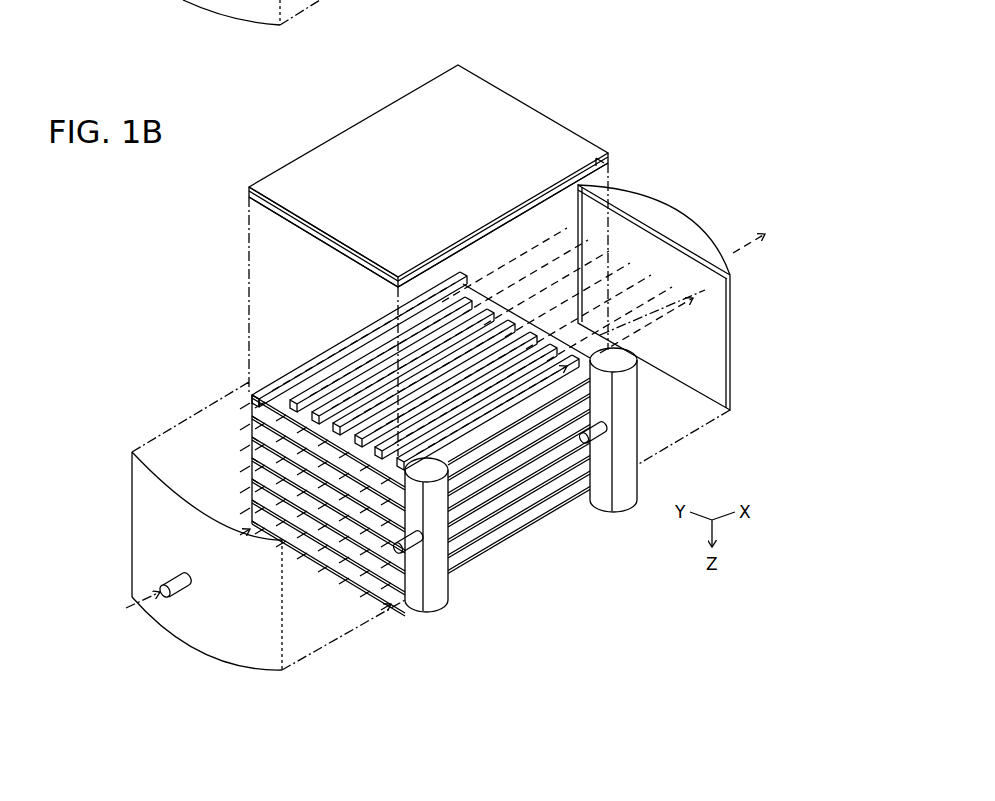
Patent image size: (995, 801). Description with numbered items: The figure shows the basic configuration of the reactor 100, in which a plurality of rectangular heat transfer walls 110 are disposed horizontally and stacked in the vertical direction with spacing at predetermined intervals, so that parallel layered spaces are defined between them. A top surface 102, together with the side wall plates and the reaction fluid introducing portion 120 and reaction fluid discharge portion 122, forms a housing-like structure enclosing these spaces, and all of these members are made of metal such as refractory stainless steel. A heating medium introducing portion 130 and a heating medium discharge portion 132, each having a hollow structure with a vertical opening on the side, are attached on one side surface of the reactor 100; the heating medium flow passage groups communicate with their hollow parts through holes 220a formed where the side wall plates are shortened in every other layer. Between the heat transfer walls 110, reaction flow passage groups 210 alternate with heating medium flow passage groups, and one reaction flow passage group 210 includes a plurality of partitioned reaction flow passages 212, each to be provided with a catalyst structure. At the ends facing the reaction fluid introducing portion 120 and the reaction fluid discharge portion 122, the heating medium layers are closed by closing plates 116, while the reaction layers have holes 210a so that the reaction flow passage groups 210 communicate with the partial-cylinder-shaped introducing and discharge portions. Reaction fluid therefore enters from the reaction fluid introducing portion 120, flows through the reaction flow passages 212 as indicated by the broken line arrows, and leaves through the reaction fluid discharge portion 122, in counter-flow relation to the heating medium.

The reactor 100 is at (633, 33).
The top surface 102 is at (450, 181).
The heat transfer walls 110 is at (276, 214).
The closing plates 116 is at (262, 204).
The reaction fluid introducing portion 120 is at (226, 628).
The reaction fluid discharge portion 122 is at (680, 240).
The heating medium introducing portion 130 is at (640, 466).
The heating medium discharge portion 132 is at (450, 600).
The reaction flow passage groups 210 is at (343, 576).
The holes 210a is at (252, 516).
The reaction flow passages 212 is at (380, 387).
The holes 220a is at (298, 12).